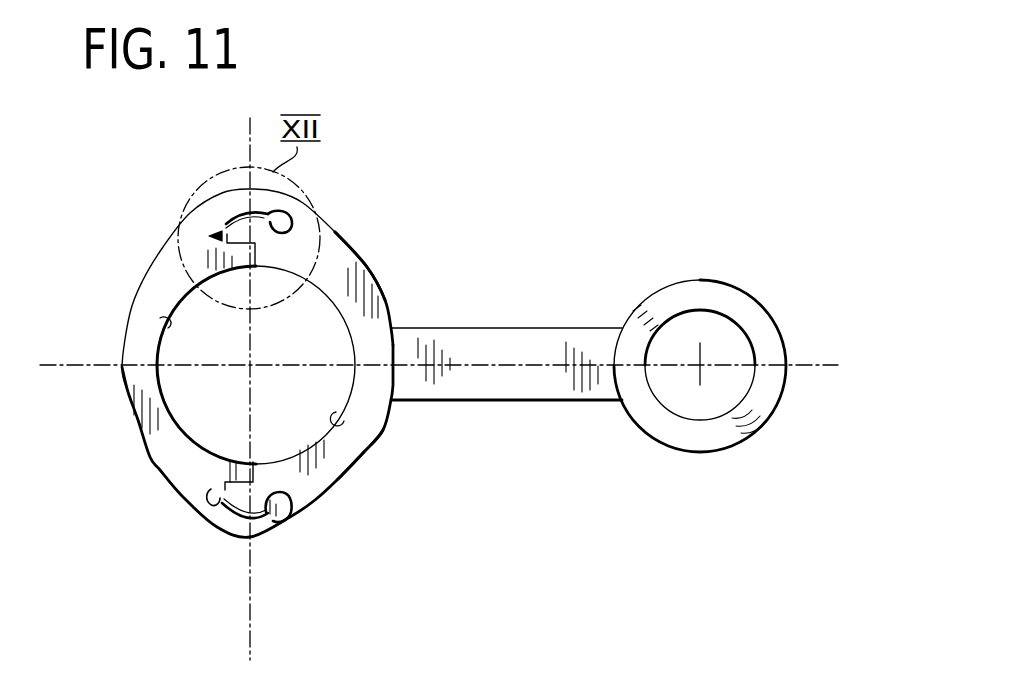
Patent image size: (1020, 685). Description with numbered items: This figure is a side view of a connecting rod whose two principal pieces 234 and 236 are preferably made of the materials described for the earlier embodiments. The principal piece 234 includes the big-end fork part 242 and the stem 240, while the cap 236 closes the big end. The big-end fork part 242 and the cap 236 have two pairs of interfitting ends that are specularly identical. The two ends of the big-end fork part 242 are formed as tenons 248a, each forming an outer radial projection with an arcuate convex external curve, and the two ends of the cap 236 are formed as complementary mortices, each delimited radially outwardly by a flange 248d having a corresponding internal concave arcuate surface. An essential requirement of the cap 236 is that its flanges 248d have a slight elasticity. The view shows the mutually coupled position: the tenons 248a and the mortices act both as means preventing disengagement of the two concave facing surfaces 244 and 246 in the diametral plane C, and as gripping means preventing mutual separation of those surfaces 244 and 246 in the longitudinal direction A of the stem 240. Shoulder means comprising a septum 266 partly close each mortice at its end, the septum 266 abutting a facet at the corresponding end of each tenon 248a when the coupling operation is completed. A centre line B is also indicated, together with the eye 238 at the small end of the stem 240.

The principal piece 234 is at (452, 290).
The cap 236 is at (149, 462).
The eye ring 238 is at (707, 292).
The stem 240 is at (473, 399).
The big-end fork part 242 is at (368, 283).
The concave facing surface 244 is at (334, 434).
The concave facing surface 246 is at (162, 325).
The tenon 248a is at (266, 214).
The flange 248d is at (236, 182).
The septum 266 is at (211, 236).
The longitudinal direction of the stem A is at (512, 360).
The bore center B is at (254, 364).
The diametral plane C is at (248, 394).